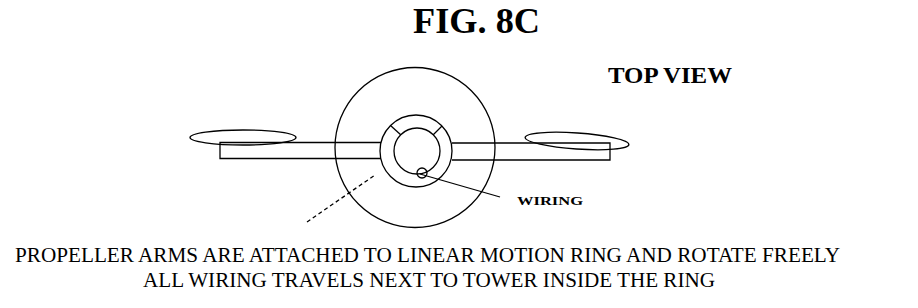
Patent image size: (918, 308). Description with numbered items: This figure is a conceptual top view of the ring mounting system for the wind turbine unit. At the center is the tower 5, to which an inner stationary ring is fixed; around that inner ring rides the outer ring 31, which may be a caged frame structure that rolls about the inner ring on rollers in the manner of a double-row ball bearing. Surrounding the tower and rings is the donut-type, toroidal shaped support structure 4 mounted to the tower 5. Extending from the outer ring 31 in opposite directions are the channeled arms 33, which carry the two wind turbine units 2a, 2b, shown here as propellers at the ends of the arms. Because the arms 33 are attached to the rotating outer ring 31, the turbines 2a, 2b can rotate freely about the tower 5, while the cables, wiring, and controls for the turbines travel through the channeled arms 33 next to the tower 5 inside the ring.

The turbine 2a is at (627, 152).
The turbine 2b is at (207, 152).
The toroidal shaped support structure 4 is at (338, 172).
The tower 5 is at (405, 150).
The outer ring 31 is at (438, 117).
The channeled arms 33 is at (583, 160).